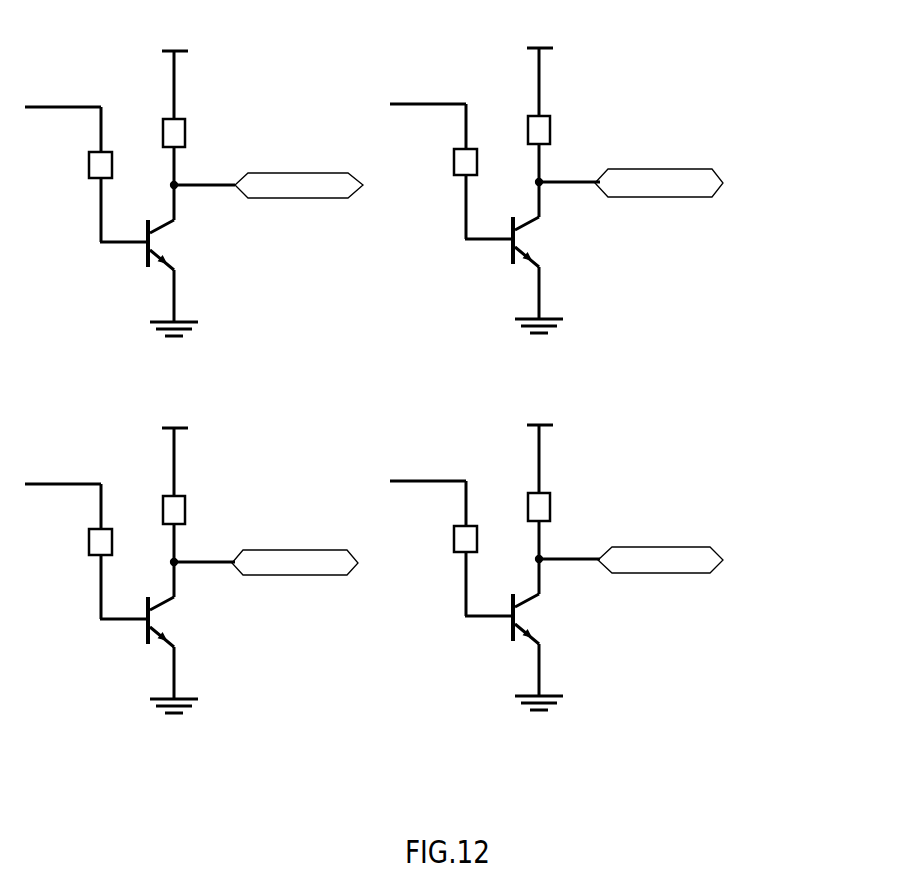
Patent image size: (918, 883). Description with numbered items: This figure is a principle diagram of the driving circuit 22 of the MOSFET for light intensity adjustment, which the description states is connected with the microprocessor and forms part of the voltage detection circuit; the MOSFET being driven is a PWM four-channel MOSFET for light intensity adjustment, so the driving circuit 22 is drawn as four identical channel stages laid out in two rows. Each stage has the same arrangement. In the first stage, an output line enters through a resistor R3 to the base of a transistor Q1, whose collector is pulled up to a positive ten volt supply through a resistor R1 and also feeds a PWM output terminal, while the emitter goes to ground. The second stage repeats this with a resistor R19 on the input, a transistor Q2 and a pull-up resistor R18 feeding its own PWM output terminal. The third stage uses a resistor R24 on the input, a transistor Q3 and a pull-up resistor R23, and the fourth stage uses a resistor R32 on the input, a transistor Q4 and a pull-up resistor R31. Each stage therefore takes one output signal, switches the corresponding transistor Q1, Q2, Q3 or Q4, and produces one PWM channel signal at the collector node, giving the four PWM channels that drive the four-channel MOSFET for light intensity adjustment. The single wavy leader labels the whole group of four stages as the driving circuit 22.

The driving circuit 22 is at (658, 378).
The resistor R1 is at (186, 133).
The resistor R3 is at (88, 165).
The transistor Q1 is at (172, 245).
The resistor R18 is at (556, 130).
The resistor R19 is at (448, 162).
The transistor Q2 is at (537, 242).
The resistor R23 is at (191, 510).
The resistor R24 is at (82, 542).
The transistor Q3 is at (172, 622).
The resistor R31 is at (557, 507).
The resistor R32 is at (447, 539).
The transistor Q4 is at (539, 619).